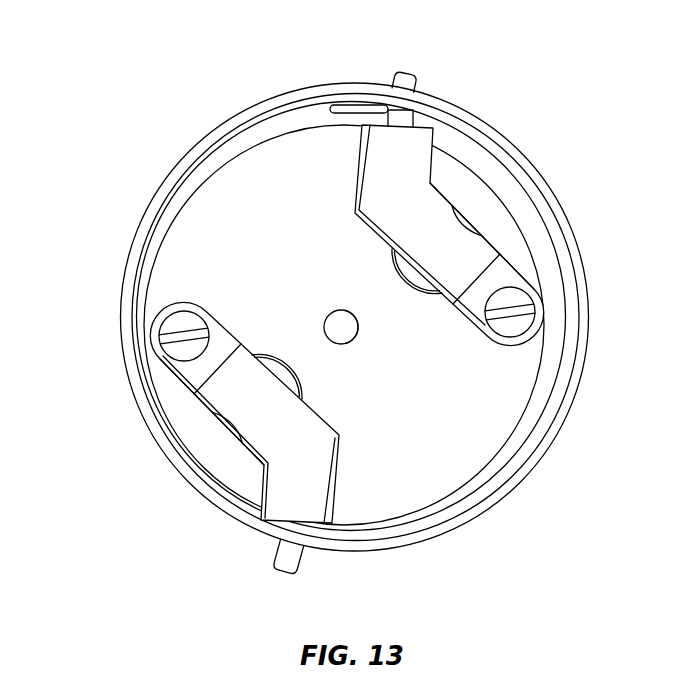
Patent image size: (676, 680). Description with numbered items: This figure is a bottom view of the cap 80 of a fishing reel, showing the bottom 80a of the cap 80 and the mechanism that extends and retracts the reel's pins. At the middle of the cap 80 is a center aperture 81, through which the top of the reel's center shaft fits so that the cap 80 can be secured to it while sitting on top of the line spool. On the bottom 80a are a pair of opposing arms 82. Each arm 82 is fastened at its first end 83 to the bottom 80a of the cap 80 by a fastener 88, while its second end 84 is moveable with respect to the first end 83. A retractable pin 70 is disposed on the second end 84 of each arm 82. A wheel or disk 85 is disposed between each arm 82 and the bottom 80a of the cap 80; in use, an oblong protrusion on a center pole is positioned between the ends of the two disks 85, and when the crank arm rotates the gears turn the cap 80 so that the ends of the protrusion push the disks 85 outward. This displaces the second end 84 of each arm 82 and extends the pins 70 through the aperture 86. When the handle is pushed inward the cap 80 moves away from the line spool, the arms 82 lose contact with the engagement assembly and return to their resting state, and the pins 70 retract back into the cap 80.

The retractable pin 70 is at (408, 80).
The cap 80 is at (213, 135).
The bottom of the cap 80a is at (449, 440).
The center aperture 81 is at (337, 325).
The arm 82 is at (427, 157).
The first end of the arm 83 is at (510, 253).
The second end of the arm 84 is at (343, 165).
The wheel or disk 85 is at (415, 280).
The aperture 86 is at (358, 110).
The fastener 88 is at (517, 296).